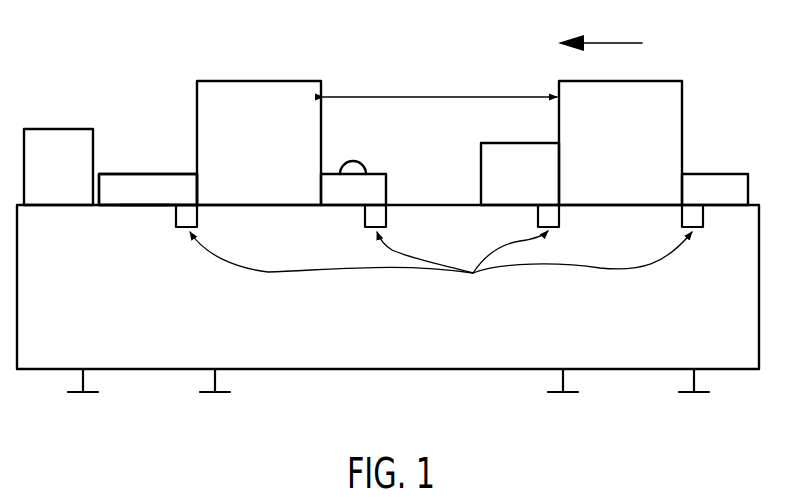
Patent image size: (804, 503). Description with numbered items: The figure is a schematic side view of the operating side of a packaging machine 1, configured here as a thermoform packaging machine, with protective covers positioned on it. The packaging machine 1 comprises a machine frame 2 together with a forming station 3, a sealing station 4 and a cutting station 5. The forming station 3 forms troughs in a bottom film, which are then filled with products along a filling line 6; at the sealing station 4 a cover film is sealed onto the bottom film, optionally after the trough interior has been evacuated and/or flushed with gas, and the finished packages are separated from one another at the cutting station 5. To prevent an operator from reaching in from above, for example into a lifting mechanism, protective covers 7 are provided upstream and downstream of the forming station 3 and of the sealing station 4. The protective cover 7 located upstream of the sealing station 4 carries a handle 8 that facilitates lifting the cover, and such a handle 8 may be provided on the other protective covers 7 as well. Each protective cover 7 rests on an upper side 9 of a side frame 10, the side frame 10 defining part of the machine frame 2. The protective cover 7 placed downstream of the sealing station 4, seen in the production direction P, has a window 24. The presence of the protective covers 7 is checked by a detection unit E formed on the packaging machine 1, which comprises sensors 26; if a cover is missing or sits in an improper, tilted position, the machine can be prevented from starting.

The packaging machine 1 is at (497, 61).
The machine frame 2 is at (762, 270).
The forming station 3 is at (611, 155).
The sealing station 4 is at (250, 161).
The cutting station 5 is at (51, 184).
The filling line 6 is at (440, 83).
The protective cover 7 is at (113, 174).
The handle 8 is at (350, 163).
The upper side 9 is at (144, 208).
The side frame 10 is at (375, 307).
The window 24 is at (151, 174).
The sensor 26 is at (197, 216).
The detection unit E is at (441, 269).
The production direction P is at (600, 29).